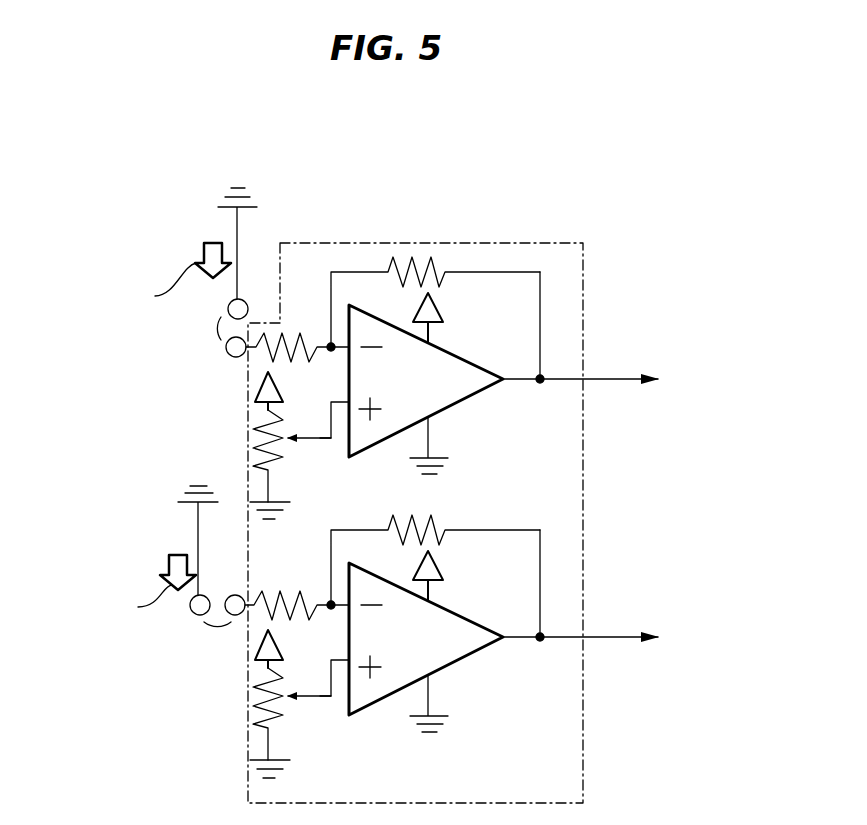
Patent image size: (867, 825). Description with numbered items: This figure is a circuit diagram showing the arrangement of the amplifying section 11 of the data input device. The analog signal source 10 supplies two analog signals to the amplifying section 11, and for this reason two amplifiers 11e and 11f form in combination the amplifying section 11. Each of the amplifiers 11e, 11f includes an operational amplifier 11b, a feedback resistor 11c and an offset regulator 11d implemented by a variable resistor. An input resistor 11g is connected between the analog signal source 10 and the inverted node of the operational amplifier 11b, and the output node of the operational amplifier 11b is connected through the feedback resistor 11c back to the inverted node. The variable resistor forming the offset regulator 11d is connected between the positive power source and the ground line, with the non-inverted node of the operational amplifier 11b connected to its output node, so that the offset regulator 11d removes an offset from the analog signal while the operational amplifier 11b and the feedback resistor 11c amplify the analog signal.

The analog signal source 10 is at (236, 152).
The amplifying section 11 is at (613, 224).
The operational amplifier 11b is at (463, 358).
The feedback resistor 11c is at (436, 268).
The offset regulator 11d is at (255, 432).
The amplifier 11e is at (554, 264).
The amplifier 11f is at (613, 621).
The input resistor 11g is at (299, 336).